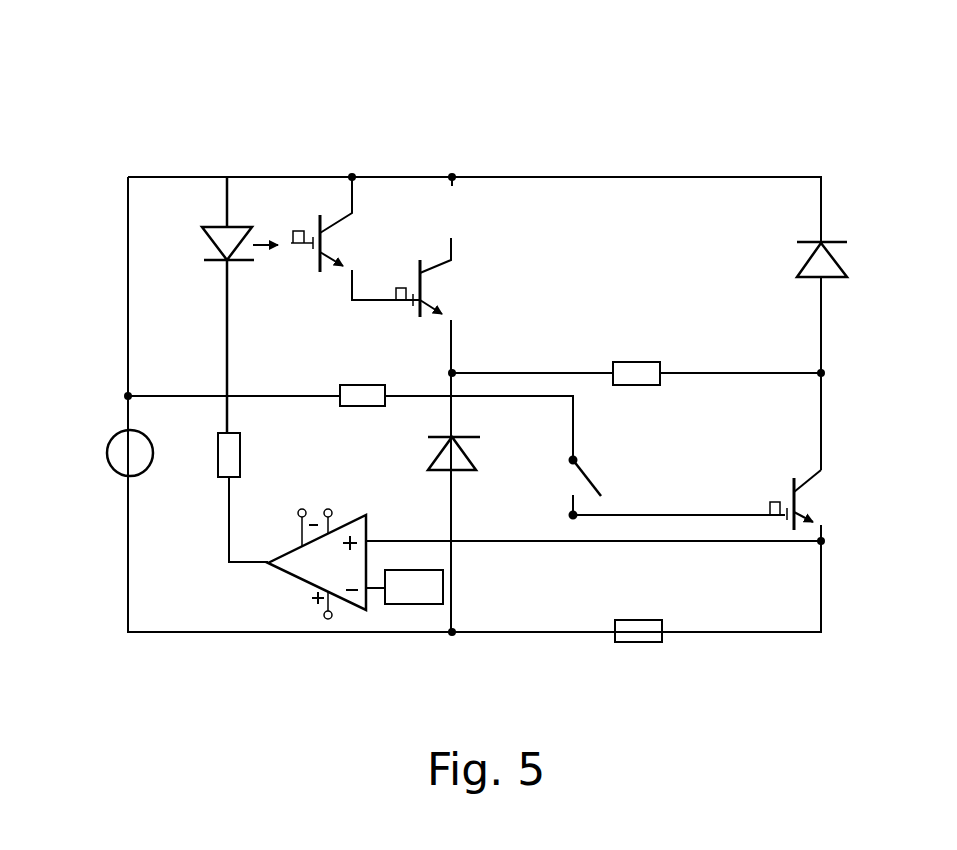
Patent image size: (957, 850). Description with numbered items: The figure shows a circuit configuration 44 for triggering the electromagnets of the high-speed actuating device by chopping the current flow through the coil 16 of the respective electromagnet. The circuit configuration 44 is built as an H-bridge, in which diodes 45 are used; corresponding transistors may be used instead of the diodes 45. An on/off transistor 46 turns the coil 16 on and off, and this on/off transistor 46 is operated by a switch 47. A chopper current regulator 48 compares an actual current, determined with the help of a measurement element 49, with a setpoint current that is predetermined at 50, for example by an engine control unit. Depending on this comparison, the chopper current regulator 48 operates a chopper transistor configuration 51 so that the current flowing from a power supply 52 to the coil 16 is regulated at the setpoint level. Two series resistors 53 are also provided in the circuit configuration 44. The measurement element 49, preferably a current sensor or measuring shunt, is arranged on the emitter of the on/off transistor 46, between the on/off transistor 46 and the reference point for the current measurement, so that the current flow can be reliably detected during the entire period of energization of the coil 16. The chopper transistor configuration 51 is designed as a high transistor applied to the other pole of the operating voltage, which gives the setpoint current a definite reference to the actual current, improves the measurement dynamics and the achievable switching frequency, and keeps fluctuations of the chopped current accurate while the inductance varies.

The circuit configuration 44 is at (540, 125).
The diodes 45 is at (222, 238).
The on/off transistor 46 is at (792, 487).
The switch 47 is at (595, 484).
The chopper current regulator 48 is at (302, 560).
The measurement element 49 is at (637, 628).
The setpoint current predetermination 50 is at (413, 590).
The chopper transistor configuration 51 is at (420, 268).
The power supply 52 is at (118, 455).
The series resistors 53 is at (348, 385).
The coil 16 is at (634, 372).